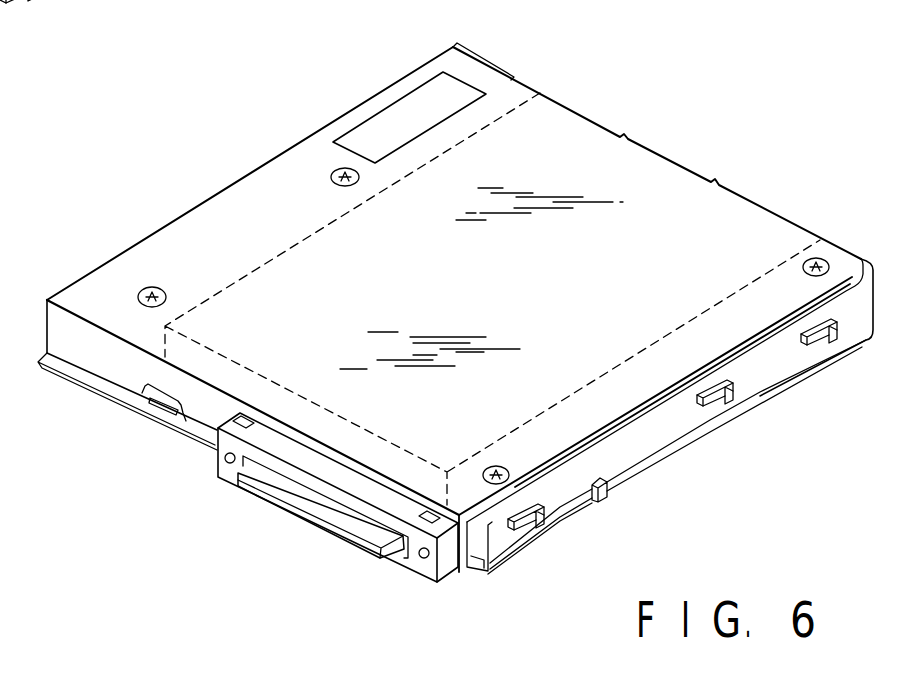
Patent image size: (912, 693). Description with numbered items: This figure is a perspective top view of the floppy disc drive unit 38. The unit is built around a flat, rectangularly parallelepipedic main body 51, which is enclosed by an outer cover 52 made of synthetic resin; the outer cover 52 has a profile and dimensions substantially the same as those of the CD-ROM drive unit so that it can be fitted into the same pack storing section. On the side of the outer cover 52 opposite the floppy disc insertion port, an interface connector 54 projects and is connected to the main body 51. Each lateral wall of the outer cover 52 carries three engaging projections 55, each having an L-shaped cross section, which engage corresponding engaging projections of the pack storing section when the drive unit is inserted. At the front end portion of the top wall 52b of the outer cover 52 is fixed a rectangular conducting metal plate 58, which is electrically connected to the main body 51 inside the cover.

The floppy disc drive unit 38 is at (246, 229).
The main body 51 is at (581, 135).
The outer cover 52 is at (113, 277).
The top wall 52b is at (743, 215).
The interface connector 54 is at (272, 508).
The engaging projections 55 is at (526, 525).
The conducting metal plate 58 is at (383, 135).